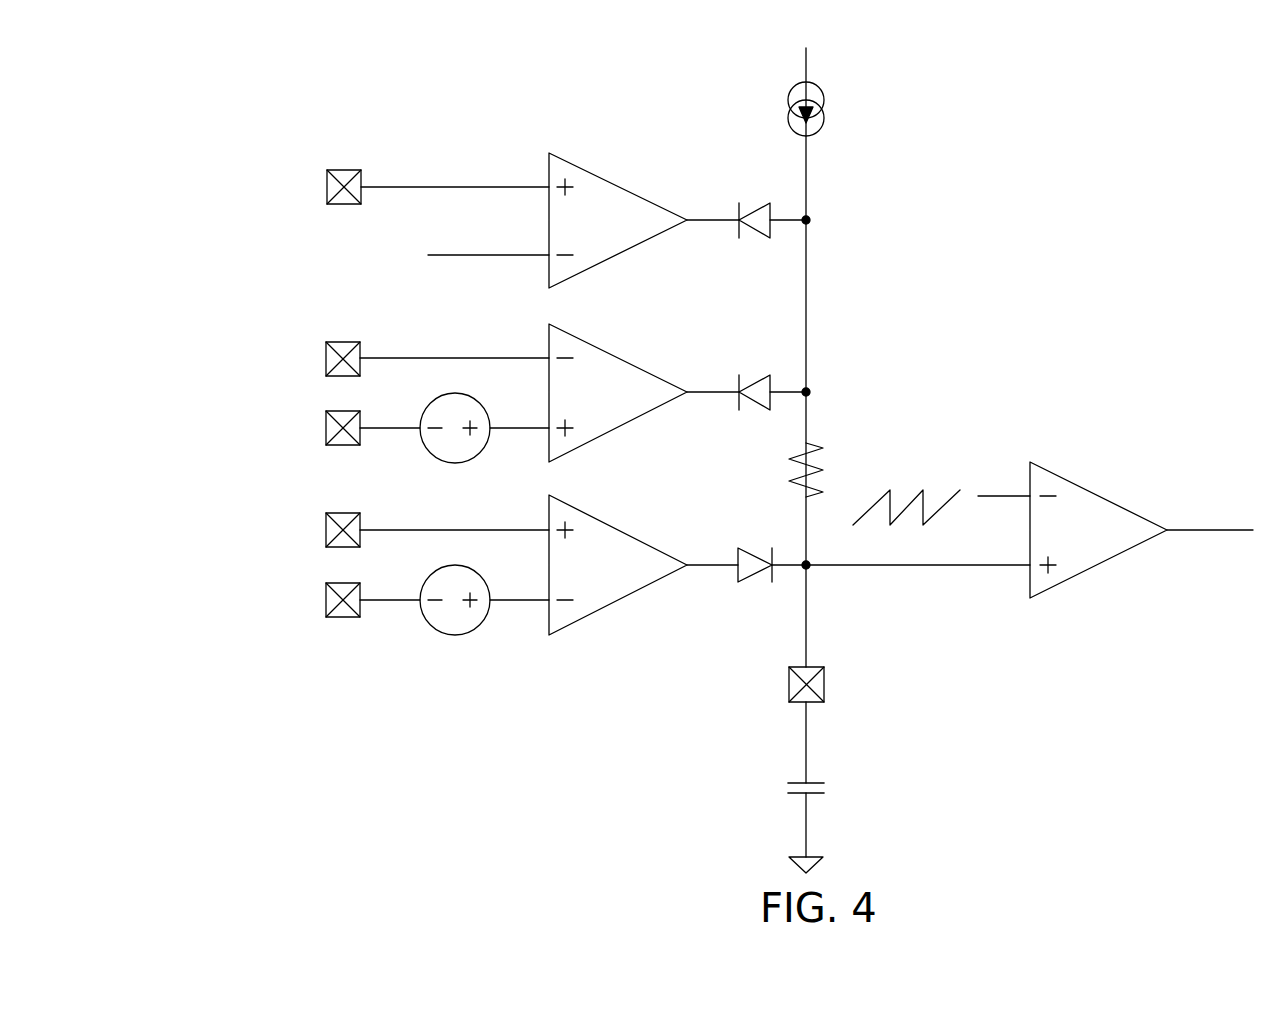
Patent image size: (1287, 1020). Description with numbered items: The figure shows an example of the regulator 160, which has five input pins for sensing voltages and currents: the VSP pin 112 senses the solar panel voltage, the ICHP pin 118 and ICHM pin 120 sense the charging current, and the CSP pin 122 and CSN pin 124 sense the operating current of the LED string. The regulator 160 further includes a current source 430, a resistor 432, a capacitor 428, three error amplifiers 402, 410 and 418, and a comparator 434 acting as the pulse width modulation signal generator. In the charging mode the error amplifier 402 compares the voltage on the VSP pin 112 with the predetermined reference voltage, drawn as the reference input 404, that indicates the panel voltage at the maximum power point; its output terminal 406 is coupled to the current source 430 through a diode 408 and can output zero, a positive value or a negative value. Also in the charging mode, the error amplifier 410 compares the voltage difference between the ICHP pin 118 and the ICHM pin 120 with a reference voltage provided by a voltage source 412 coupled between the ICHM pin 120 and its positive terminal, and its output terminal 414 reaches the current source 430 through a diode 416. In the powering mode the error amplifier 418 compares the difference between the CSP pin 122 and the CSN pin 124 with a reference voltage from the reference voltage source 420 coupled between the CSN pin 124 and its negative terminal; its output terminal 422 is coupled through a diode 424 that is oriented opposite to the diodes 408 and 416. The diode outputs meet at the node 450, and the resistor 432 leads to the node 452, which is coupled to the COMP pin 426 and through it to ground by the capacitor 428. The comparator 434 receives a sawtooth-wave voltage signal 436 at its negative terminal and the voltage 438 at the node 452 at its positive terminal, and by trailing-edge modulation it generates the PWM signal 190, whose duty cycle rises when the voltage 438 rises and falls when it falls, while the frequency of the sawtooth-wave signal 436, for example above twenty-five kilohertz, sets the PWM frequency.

The regulator 160 is at (250, 135).
The VSP pin 112 is at (340, 170).
The ICHP pin 118 is at (340, 342).
The ICHM pin 120 is at (340, 410).
The CSP pin 122 is at (340, 513).
The CSN pin 124 is at (340, 582).
The PWM signal 190 is at (1177, 535).
The error amplifier 402 is at (570, 160).
The VSP_MPP reference voltage input 404 is at (440, 255).
The output terminal 406 is at (700, 222).
The diode 408 is at (766, 204).
The error amplifier 410 is at (570, 332).
The voltage source 412 is at (436, 400).
The output terminal 414 is at (700, 394).
The diode 416 is at (767, 376).
The error amplifier 418 is at (570, 502).
The reference voltage source 420 is at (426, 580).
The output terminal 422 is at (700, 567).
The diode 424 is at (756, 550).
The COMP pin 426 is at (815, 704).
The capacitor 428 is at (800, 782).
The current source 430 is at (808, 86).
The resistor 432 is at (809, 446).
The comparator 434 is at (1093, 488).
The sawtooth-wave voltage signal 436 is at (998, 494).
The voltage 438 is at (992, 562).
The node 450 is at (809, 216).
The node 452 is at (809, 570).